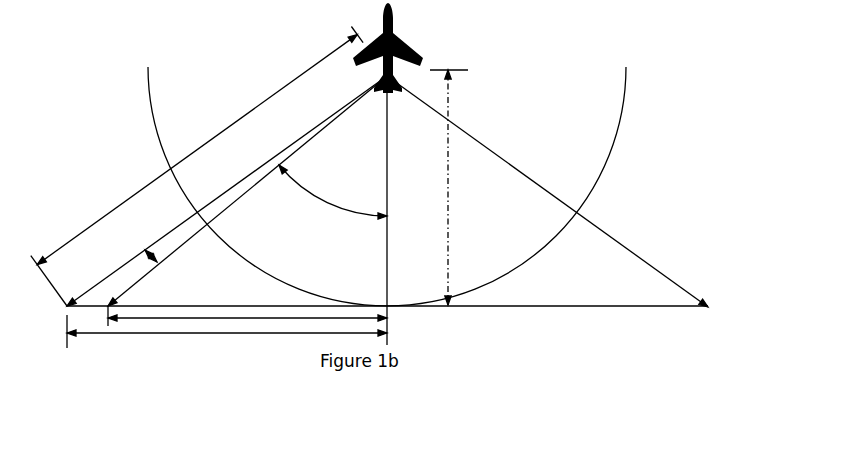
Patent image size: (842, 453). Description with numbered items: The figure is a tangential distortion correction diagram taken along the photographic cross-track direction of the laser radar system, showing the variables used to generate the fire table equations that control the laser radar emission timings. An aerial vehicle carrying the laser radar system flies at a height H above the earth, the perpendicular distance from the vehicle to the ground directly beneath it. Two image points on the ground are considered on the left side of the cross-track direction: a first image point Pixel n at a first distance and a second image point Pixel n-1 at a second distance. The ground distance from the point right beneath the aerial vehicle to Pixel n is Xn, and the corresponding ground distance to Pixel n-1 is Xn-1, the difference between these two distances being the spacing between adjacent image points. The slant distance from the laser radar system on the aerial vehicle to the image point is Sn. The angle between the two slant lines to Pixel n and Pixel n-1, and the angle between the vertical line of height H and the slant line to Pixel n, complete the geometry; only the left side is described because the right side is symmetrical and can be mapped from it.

The distance from laser radar system to image point n Sn is at (197, 167).
The distance from aerial vehicle to earth beneath H is at (458, 187).
The distance between image point pixel n and point beneath aerial vehicle Xn is at (227, 331).
The distance between image point pixel n-1 and point beneath aerial vehicle Xn-1 is at (247, 316).
The image point at first distance n Pixel n is at (210, 191).
The image point at second distance n-1 Pixel n-1 is at (247, 191).